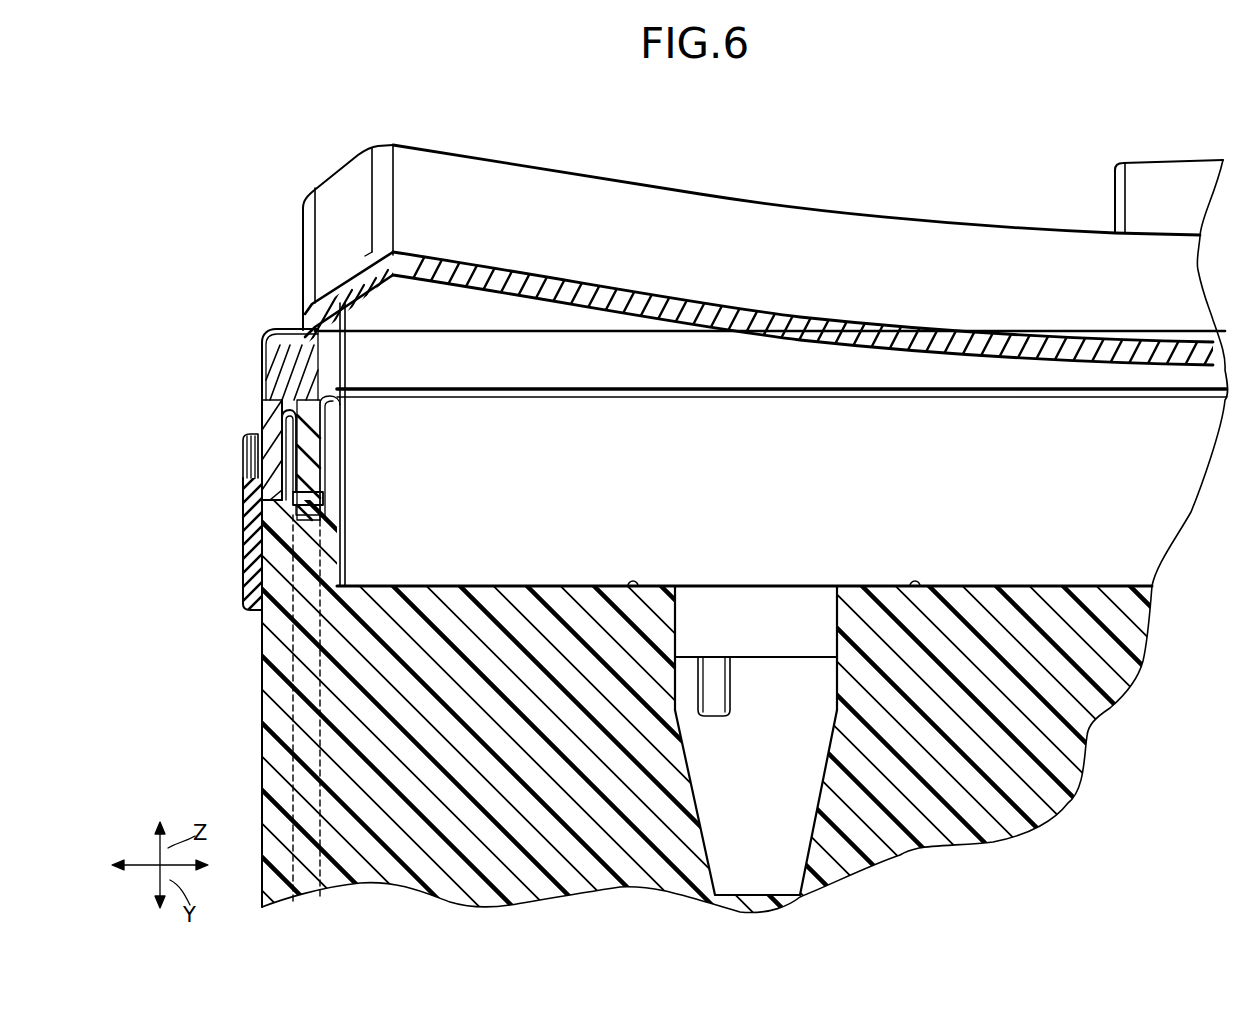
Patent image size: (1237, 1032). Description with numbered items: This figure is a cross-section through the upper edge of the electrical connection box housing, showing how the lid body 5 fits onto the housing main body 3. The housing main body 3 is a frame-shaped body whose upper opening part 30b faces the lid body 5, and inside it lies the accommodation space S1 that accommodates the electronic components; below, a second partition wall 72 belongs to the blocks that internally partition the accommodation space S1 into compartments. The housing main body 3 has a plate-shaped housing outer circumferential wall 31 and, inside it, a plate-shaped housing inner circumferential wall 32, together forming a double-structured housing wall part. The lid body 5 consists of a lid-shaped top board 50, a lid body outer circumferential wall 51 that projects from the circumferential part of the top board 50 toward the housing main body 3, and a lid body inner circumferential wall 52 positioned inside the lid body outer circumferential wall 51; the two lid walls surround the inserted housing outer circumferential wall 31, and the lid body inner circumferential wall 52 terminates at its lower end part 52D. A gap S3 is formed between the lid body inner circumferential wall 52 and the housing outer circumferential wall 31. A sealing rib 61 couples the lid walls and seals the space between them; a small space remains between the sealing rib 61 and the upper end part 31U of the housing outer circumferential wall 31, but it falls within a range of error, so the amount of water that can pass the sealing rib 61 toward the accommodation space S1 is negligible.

The lid body 5 is at (826, 201).
The top board 50 is at (497, 185).
The opening part 30b is at (340, 395).
The housing inner circumferential wall 32 is at (340, 440).
The sealing rib 61 is at (262, 352).
The upper end part 31U is at (262, 392).
The housing outer circumferential wall 31 is at (264, 415).
The lid body inner circumferential wall 52 is at (340, 473).
The lower end part 52D is at (340, 503).
The gap S3 is at (243, 462).
The lid body outer circumferential wall 51 is at (243, 568).
The second partition wall 72 is at (488, 596).
The accommodation space S1 is at (781, 683).
The housing main body 3 is at (232, 730).